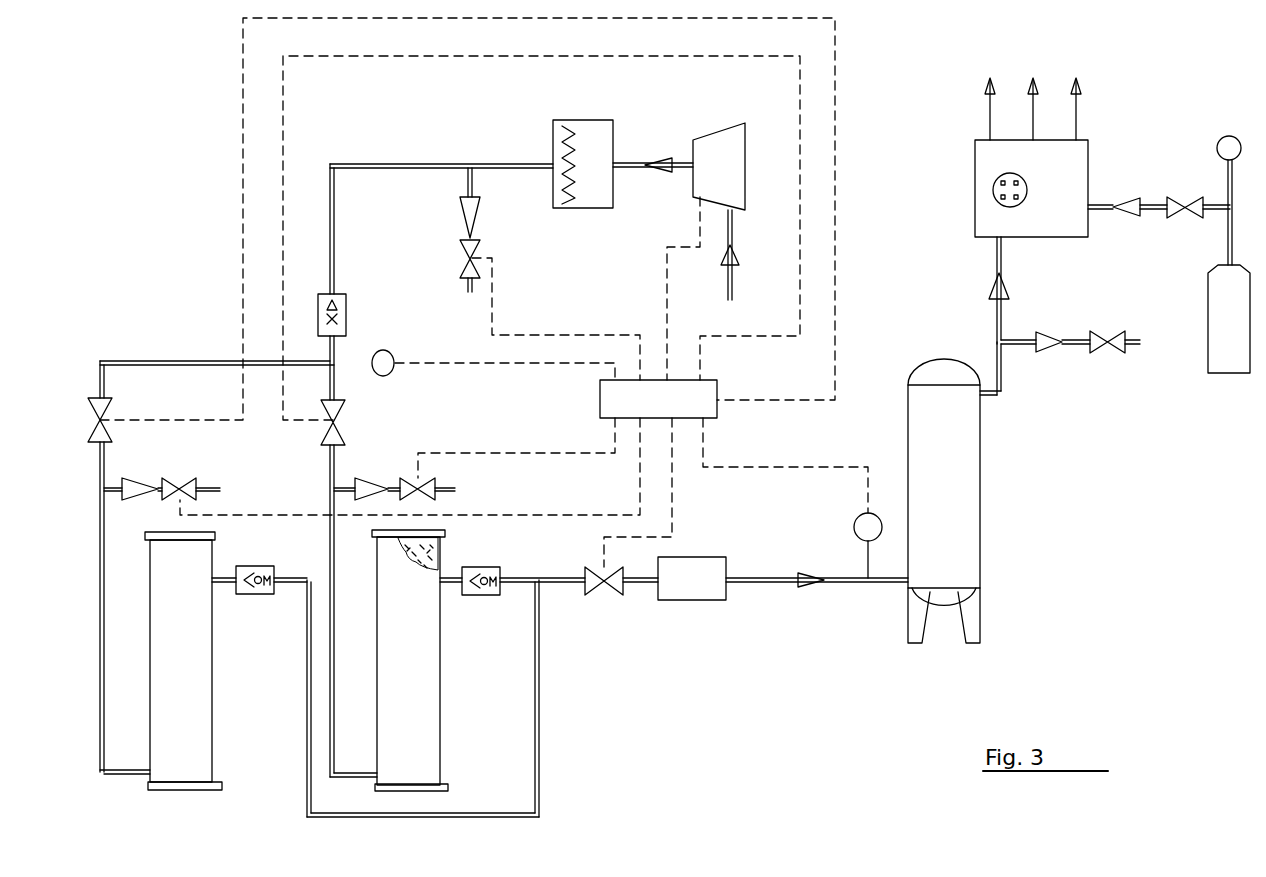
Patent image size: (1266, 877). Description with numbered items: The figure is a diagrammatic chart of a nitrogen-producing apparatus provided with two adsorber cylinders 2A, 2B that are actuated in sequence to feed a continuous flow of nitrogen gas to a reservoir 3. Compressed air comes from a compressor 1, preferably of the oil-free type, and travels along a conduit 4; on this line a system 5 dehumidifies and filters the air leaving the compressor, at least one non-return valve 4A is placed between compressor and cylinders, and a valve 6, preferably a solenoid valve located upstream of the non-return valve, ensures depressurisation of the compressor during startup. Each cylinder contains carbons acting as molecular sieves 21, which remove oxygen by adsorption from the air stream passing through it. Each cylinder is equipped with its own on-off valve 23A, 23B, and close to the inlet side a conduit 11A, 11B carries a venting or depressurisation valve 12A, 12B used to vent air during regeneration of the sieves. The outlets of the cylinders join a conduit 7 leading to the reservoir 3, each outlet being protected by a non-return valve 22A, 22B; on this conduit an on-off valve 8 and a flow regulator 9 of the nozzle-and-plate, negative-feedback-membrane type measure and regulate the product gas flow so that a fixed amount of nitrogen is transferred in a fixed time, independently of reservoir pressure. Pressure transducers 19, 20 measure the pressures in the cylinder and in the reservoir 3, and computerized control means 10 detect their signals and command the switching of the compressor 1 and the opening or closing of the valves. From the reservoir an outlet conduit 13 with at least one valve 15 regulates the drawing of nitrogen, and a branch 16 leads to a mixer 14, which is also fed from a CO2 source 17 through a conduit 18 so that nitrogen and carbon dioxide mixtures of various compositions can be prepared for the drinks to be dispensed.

The compressor 1 is at (738, 162).
The adsorber cylinder 2A is at (436, 700).
The adsorber cylinder 2B is at (198, 706).
The reservoir 3 is at (978, 506).
The conduit 4 is at (373, 164).
The non-return valve 4A is at (346, 320).
The dehumidifying and filtering system 5 is at (610, 124).
The valve 6 is at (468, 248).
The conduit 7 is at (540, 716).
The on-off valve 8 is at (616, 594).
The flow regulator 9 is at (700, 588).
The control means 10 is at (712, 406).
The conduit 11A is at (346, 488).
The conduit 11B is at (112, 488).
The venting valve 12A is at (408, 478).
The venting valve 12B is at (184, 480).
The conduit 13 is at (1002, 380).
The mixer 14 is at (976, 150).
The valve 15 is at (1110, 352).
The branch 16 is at (994, 252).
The CO2 source 17 is at (1214, 374).
The conduit 18 is at (1152, 200).
The pressure transducer 19 is at (394, 372).
The pressure transducer 20 is at (854, 526).
The molecular sieves 21 is at (428, 570).
The non-return valve 22A is at (488, 566).
The non-return valve 22B is at (252, 594).
The on-off valve 23A is at (326, 432).
The on-off valve 23B is at (106, 410).